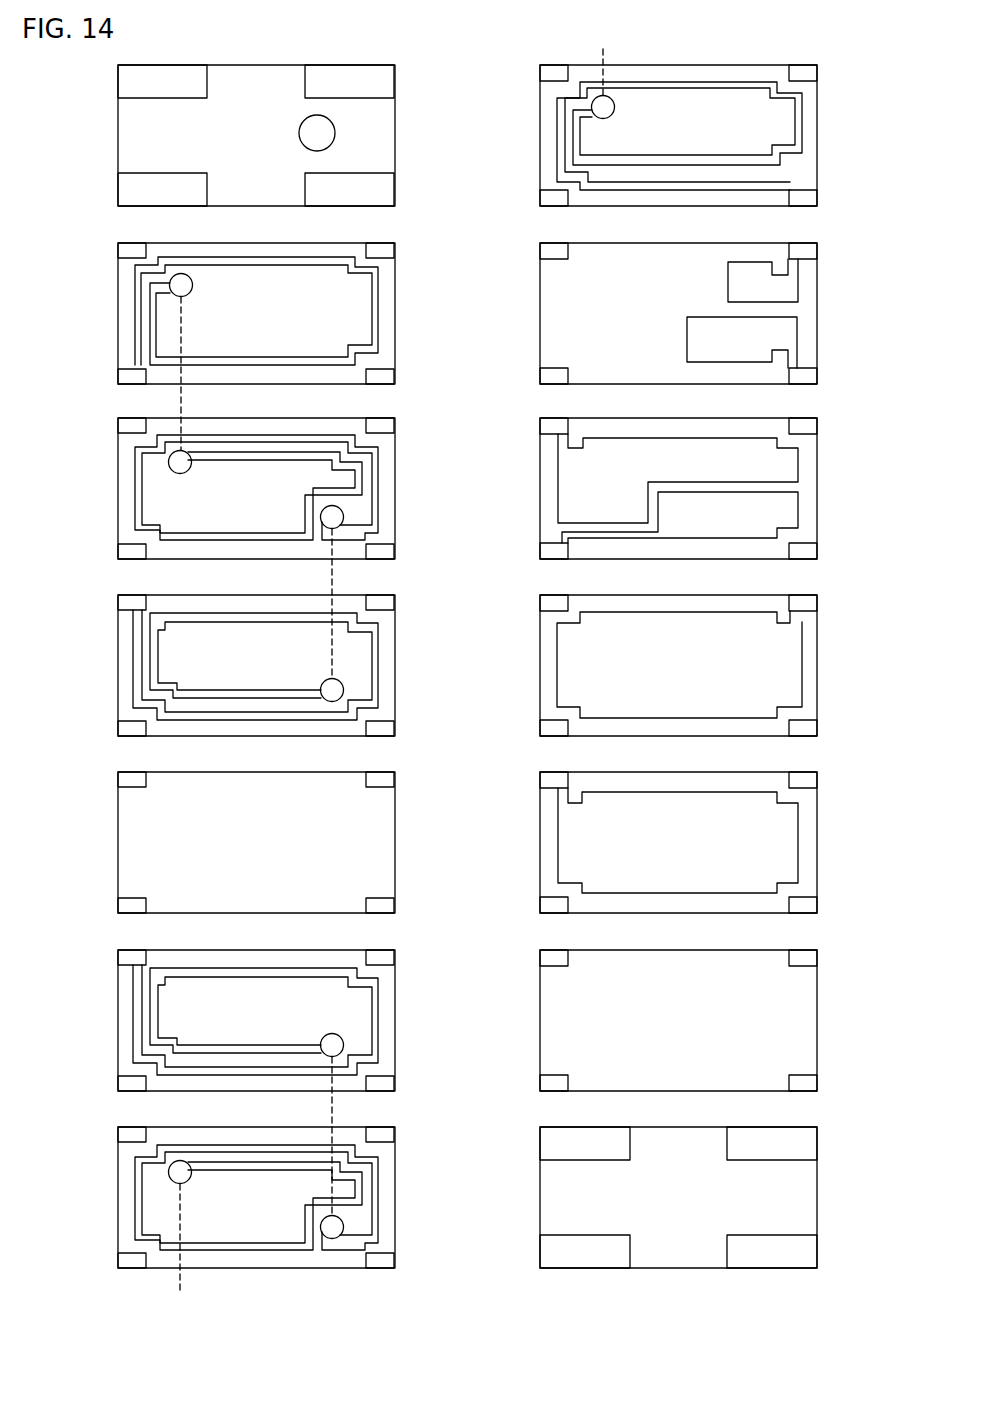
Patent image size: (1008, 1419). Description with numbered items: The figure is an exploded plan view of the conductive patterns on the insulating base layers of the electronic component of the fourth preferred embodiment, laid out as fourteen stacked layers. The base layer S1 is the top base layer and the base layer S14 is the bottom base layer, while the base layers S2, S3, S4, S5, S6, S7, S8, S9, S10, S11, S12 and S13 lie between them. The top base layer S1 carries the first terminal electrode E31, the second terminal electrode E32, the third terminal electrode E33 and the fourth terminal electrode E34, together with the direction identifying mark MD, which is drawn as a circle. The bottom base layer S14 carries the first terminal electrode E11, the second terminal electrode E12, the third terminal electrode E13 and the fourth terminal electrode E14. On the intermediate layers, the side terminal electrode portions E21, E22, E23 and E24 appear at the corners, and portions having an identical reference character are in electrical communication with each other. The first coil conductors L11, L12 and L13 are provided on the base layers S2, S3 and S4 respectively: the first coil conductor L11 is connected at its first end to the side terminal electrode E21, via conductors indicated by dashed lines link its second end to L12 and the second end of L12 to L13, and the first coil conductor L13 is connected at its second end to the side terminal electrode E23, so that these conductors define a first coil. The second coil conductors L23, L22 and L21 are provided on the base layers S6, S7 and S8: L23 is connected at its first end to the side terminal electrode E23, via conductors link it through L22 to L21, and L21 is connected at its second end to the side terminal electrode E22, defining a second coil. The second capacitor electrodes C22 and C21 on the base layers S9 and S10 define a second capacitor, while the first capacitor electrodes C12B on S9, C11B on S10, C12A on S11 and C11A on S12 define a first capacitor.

The top base layer S1 is at (394, 160).
The base layer S2 is at (396, 306).
The base layer S3 is at (396, 481).
The base layer S4 is at (396, 658).
The base layer S5 is at (396, 835).
The base layer S6 is at (396, 1013).
The base layer S7 is at (396, 1190).
The base layer S8 is at (818, 129).
The base layer S9 is at (818, 308).
The base layer S10 is at (818, 483).
The base layer S11 is at (818, 660).
The base layer S12 is at (818, 837).
The base layer S13 is at (818, 1015).
The bottom base layer S14 is at (818, 1193).
The first terminal electrode E31 is at (124, 190).
The second terminal electrode E32 is at (386, 192).
The third terminal electrode E33 is at (124, 80).
The fourth terminal electrode E34 is at (386, 80).
The direction identifying mark MD is at (330, 136).
The side terminal electrode portion E21 is at (120, 373).
The side terminal electrode portion E22 is at (386, 378).
The side terminal electrode portion E23 is at (120, 248).
The side terminal electrode portion E24 is at (386, 250).
The first terminal electrode E11 is at (548, 1250).
The second terminal electrode E12 is at (810, 1250).
The third terminal electrode E13 is at (548, 1146).
The fourth terminal electrode E14 is at (810, 1148).
The first coil conductor L11 is at (138, 314).
The first coil conductor L12 is at (138, 489).
The first coil conductor L13 is at (136, 666).
The second coil conductor L21 is at (560, 130).
The second coil conductor L22 is at (136, 1198).
The second coil conductor L23 is at (136, 1021).
The first capacitor electrode C11A is at (678, 840).
The first capacitor electrode C11B is at (678, 478).
The first capacitor electrode C12A is at (679, 664).
The first capacitor electrode C12B is at (728, 286).
The second capacitor electrode C21 is at (680, 517).
The second capacitor electrode C22 is at (694, 339).